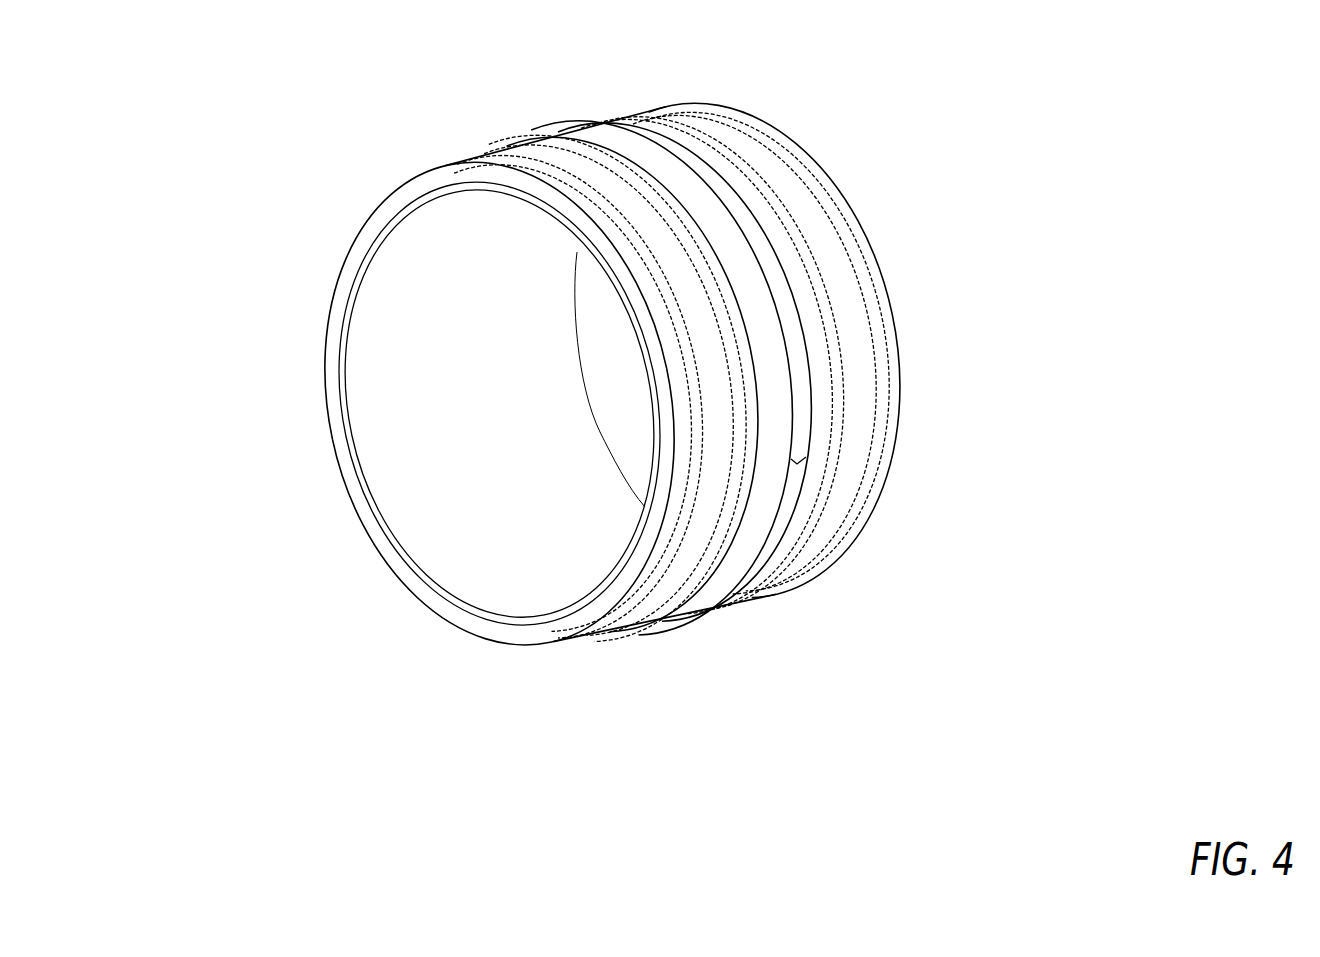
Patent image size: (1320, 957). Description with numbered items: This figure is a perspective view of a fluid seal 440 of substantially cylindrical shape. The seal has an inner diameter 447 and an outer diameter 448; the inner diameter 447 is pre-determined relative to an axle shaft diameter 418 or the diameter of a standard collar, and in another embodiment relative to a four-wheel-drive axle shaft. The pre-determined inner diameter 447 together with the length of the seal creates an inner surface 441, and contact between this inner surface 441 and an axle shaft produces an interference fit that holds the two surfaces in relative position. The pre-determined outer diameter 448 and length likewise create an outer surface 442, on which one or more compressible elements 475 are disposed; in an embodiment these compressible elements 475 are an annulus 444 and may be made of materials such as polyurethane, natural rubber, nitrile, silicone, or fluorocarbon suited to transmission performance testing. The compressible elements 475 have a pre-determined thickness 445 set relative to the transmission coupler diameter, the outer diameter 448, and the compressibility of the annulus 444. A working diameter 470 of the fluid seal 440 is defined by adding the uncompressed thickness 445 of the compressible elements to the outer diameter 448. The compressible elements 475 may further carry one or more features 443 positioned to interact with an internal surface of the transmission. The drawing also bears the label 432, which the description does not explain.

The fluid seal 440 is at (206, 71).
The inner surface 441 is at (375, 334).
The outer surface 442 is at (666, 176).
The features 443 is at (877, 304).
The annulus 444 is at (768, 160).
The thickness 445 is at (803, 486).
The inner diameter 447 is at (380, 236).
The outer diameter 448 is at (447, 184).
The working diameter 470 is at (893, 467).
The compressible elements 475 is at (697, 552).
The axle shaft diameter 418 is at (416, 572).
The inner edge 432 is at (468, 608).